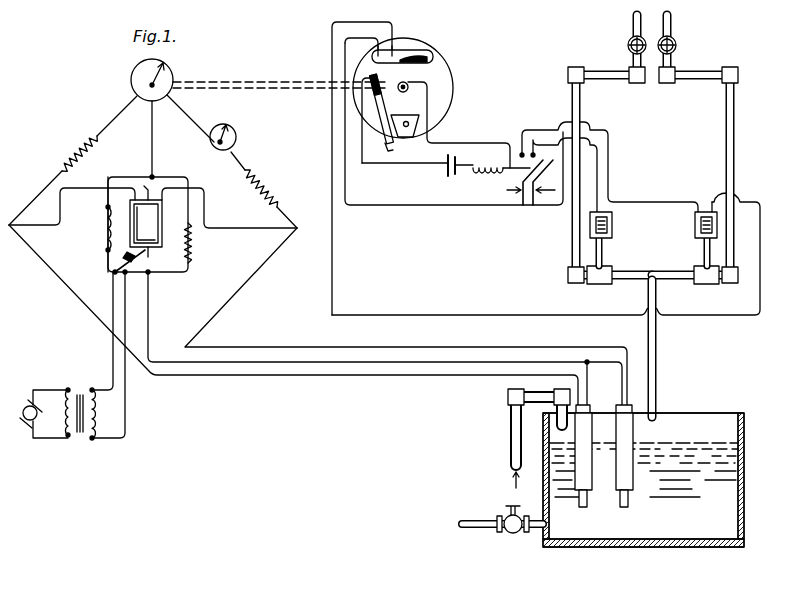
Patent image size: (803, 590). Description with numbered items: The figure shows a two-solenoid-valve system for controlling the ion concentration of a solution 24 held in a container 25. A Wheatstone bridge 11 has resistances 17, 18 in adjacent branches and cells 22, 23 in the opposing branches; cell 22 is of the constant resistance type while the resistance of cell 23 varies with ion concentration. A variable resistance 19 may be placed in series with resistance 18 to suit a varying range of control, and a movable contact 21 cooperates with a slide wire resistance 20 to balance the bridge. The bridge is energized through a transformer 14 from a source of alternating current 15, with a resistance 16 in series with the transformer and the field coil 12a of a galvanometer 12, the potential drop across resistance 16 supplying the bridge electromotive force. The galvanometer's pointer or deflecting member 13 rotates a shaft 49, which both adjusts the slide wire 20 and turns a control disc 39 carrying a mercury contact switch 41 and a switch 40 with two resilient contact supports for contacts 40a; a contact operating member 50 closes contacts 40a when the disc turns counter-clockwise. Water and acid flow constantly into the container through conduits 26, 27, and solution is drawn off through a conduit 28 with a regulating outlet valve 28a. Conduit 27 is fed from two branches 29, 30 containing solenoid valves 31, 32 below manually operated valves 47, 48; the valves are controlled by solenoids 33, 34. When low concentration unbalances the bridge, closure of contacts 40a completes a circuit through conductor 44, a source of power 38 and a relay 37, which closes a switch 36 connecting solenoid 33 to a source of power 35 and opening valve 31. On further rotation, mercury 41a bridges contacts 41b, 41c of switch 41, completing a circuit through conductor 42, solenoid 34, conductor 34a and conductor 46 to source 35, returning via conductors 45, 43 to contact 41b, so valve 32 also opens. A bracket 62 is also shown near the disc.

The Wheatstone bridge 11 is at (43, 173).
The galvanometer 12 is at (163, 240).
The field coil 12a is at (108, 205).
The pointer or deflecting member 13 is at (112, 268).
The transformer 14 is at (80, 436).
The source of alternating current 15 is at (30, 421).
The resistance 16 is at (195, 250).
The resistance 17 is at (86, 128).
The resistance 18 is at (270, 182).
The variable resistance 19 is at (236, 138).
The slide wire resistance 20 is at (133, 68).
The movable contact 21 is at (172, 78).
The cell 22 is at (583, 432).
The cell 23 is at (634, 438).
The solution 24 is at (731, 488).
The container 25 is at (682, 548).
The conduit 26 is at (511, 412).
The conduit 27 is at (659, 374).
The conduit 28 is at (470, 526).
The regulating outlet valve 28a is at (511, 519).
The branch 29 is at (582, 104).
The branch 30 is at (727, 107).
The solenoid valve 31 is at (613, 272).
The solenoid valve 32 is at (696, 270).
The solenoid 33 is at (613, 214).
The solenoid 34 is at (716, 214).
The conductor 34a is at (678, 201).
The source of power 35 is at (527, 208).
The switch 36 is at (540, 172).
The relay 37 is at (494, 164).
The source of power 38 is at (444, 173).
The control disc 39 is at (446, 78).
The switch 40 is at (378, 127).
The contacts 40a is at (391, 147).
The mercury contact switch 41 is at (408, 57).
The globule of mercury 41a is at (432, 61).
The contact 41b is at (377, 52).
The contact 41c is at (393, 50).
The conductor 42 is at (332, 62).
The conductor 43 is at (376, 207).
The conductor 44 is at (410, 165).
The conductor 45 is at (609, 141).
The conductor 46 is at (598, 169).
The manually operated valve 47 is at (627, 44).
The manually operated valve 48 is at (678, 44).
The shaft 49 is at (244, 82).
The contact operating member 50 is at (416, 127).
The bracket 62 is at (420, 118).